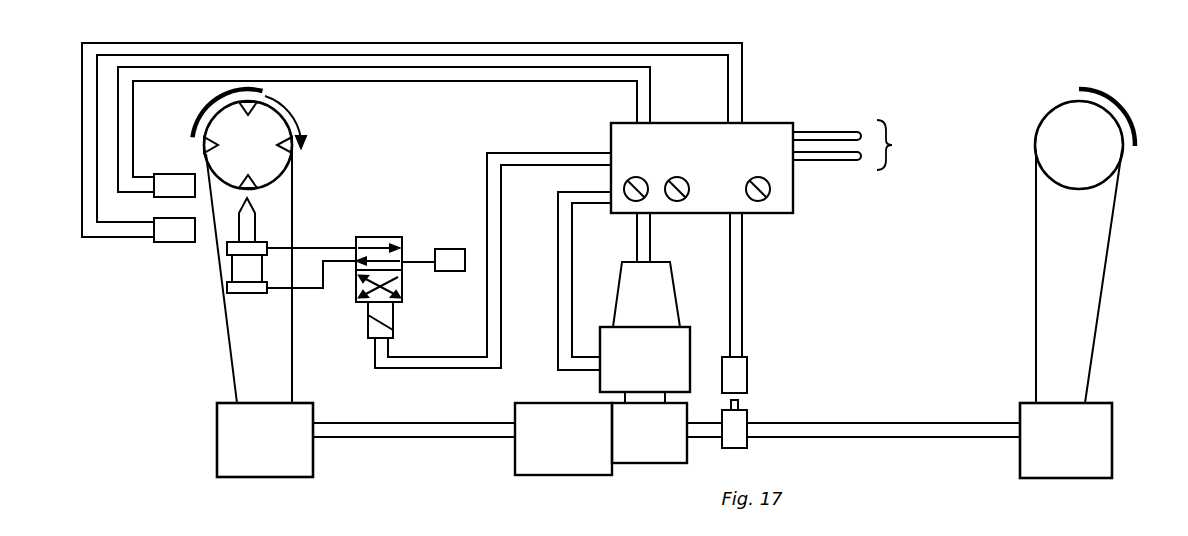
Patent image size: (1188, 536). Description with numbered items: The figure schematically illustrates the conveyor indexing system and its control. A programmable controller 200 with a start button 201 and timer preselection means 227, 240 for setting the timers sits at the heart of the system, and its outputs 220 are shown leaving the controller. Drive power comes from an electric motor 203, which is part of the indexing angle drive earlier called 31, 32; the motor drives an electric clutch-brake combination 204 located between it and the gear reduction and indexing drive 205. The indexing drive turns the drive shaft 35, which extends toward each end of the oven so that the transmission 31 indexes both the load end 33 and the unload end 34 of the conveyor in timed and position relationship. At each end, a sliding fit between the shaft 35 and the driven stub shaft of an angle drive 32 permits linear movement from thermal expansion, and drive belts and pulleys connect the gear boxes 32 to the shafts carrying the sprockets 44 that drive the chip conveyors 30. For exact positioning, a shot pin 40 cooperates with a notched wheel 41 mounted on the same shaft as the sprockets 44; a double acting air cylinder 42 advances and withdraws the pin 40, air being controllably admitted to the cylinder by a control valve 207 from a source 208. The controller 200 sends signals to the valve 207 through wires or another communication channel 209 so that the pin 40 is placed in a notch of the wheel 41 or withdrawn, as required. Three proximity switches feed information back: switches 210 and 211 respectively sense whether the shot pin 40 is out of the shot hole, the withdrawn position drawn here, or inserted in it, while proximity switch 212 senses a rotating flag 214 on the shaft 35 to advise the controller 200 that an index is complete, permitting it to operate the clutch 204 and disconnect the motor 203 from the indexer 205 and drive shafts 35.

The programmable controller 200 is at (819, 54).
The start button 201 is at (770, 186).
The electric motor 203 is at (666, 262).
The electric clutch-brake combination 204 is at (600, 378).
The gear reduction and indexing drive 205 is at (548, 446).
The control valve 207 is at (365, 237).
The source 208 is at (460, 249).
The communication channel 209 is at (565, 153).
The proximity switch 210 is at (185, 242).
The proximity switch 211 is at (180, 174).
The proximity switch 212 is at (747, 358).
The rotating flag 214 is at (747, 446).
The control cables 220 is at (892, 142).
The timer preselection means 227 is at (672, 197).
The timer preselection means 240 is at (629, 197).
The chip conveyor 30 is at (290, 87).
The indexing gear reducer transmission 31 is at (660, 463).
The angle drive 32 is at (251, 452).
The load end 33 is at (146, 330).
The unload end 34 is at (983, 235).
The drive shaft 35 is at (400, 423).
The shot pin 40 is at (257, 217).
The notched wheel 41 is at (248, 145).
The double acting air cylinder 42 is at (245, 293).
The sprockets 44 is at (207, 104).